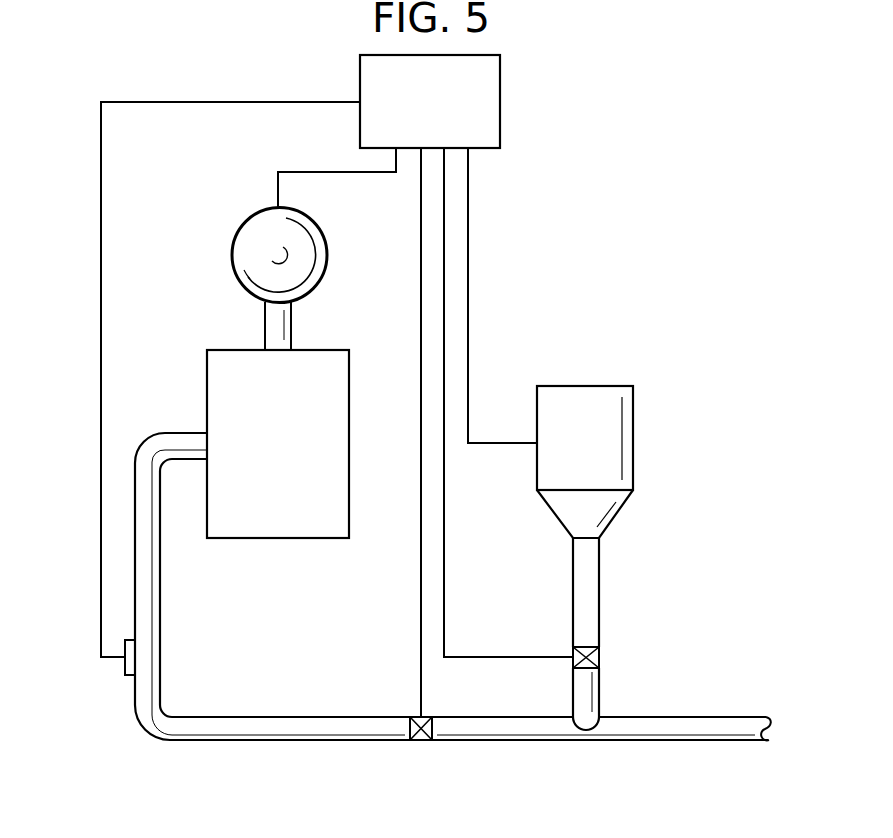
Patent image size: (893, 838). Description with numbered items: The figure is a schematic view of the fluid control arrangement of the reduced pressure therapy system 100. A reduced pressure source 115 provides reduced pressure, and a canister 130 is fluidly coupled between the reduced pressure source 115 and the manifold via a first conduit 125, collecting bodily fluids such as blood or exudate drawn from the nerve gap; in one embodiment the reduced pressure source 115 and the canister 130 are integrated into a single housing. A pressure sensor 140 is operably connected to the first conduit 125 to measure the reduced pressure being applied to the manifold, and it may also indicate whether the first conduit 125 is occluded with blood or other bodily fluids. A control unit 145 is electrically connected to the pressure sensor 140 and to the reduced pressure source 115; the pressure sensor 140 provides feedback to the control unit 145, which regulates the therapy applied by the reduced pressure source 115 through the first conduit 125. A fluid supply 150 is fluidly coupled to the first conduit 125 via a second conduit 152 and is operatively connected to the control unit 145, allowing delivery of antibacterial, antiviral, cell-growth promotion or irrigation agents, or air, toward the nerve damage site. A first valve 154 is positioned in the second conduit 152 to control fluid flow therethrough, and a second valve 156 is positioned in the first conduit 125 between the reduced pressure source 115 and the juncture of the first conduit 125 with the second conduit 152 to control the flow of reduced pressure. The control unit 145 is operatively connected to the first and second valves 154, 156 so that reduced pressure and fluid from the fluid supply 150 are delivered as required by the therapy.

The reduced pressure therapy system 100 is at (706, 84).
The reduced pressure source 115 is at (232, 256).
The first conduit 125 is at (212, 742).
The canister 130 is at (300, 455).
The pressure sensor 140 is at (122, 667).
The control unit 145 is at (453, 116).
The fluid supply 150 is at (635, 432).
The second conduit 152 is at (600, 585).
The first valve 154 is at (600, 661).
The second valve 156 is at (426, 742).